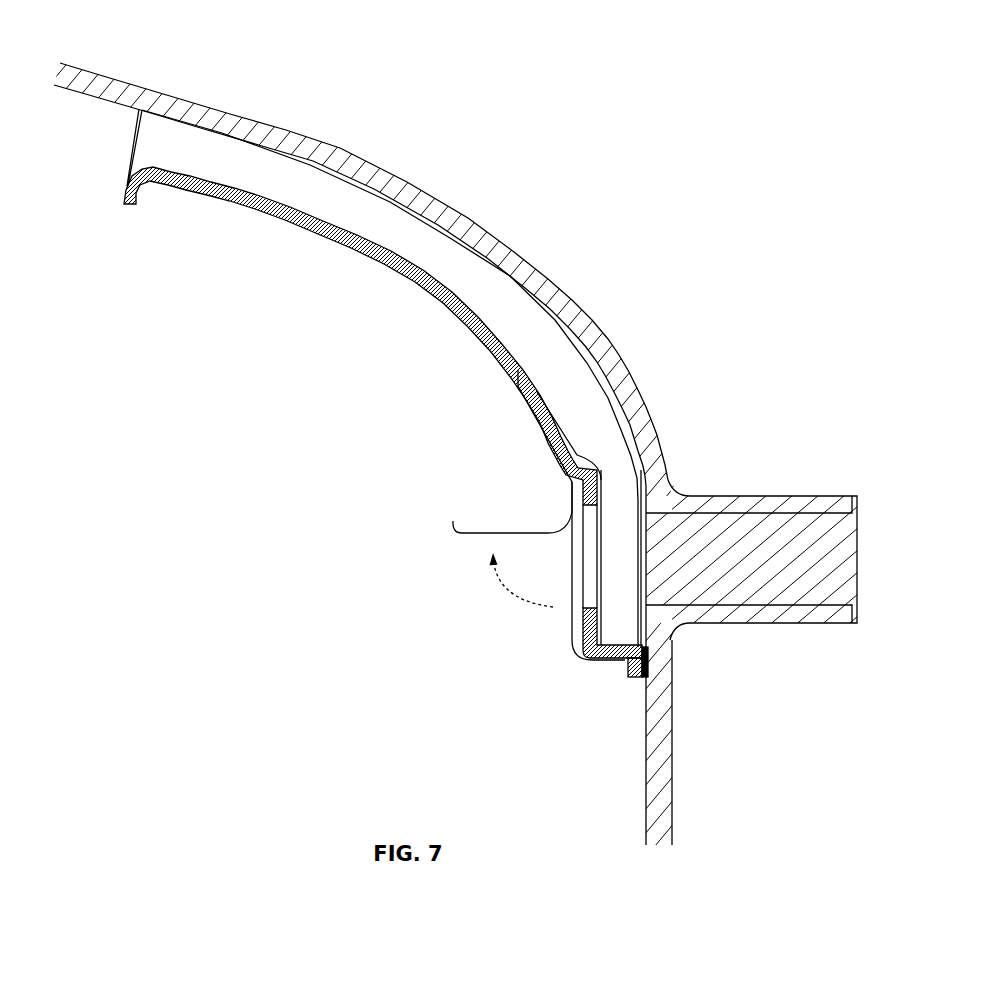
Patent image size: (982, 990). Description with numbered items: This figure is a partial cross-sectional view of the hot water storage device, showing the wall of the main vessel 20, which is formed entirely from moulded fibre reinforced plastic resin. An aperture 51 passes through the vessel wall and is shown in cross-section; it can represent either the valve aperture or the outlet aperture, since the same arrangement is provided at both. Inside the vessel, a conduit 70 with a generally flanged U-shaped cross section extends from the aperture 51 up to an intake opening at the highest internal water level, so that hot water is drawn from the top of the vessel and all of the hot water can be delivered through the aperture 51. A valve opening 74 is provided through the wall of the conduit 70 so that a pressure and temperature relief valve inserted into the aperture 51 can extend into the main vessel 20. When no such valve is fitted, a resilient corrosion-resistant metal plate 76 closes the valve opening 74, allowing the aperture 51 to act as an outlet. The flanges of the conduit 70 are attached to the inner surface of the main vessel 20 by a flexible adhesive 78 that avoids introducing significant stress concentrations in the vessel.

The main vessel 20 is at (528, 246).
The aperture 51 is at (782, 490).
The conduit 70 is at (345, 255).
The valve opening 74 is at (604, 580).
The resilient corrosion-resistant metal plate 76 is at (451, 542).
The flexible adhesive 78 is at (635, 689).